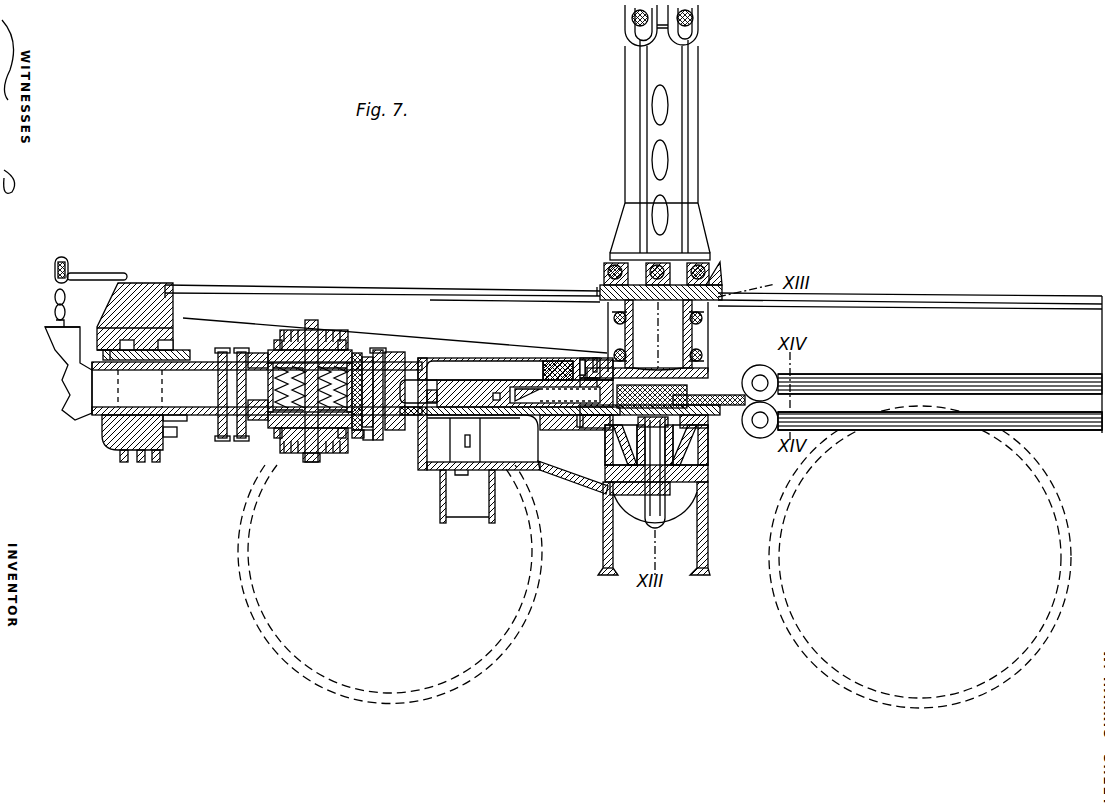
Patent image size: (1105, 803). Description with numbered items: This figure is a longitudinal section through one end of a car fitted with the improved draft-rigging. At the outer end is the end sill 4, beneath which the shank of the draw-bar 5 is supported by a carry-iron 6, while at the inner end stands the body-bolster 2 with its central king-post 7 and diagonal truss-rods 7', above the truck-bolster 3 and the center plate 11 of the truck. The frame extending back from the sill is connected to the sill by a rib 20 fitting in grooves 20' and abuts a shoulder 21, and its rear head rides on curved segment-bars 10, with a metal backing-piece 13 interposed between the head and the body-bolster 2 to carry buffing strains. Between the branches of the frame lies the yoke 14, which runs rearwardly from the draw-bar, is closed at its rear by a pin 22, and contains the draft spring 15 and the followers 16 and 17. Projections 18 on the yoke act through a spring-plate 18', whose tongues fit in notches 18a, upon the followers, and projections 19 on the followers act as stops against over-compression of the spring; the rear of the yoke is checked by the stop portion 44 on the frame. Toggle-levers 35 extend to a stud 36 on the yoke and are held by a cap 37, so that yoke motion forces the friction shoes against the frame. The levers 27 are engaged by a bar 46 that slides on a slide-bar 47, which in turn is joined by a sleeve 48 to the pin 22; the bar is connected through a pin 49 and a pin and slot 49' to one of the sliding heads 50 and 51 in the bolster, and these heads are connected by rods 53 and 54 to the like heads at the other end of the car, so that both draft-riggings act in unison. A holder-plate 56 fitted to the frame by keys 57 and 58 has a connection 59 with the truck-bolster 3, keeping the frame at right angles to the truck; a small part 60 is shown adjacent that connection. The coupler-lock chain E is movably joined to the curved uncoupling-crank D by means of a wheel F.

The body-bolster 2 is at (710, 342).
The truck-bolster 3 is at (708, 472).
The end sill 4 is at (78, 338).
The shank of draw-bar 5 is at (257, 388).
The carry-iron 6 is at (112, 430).
The king-post 7 is at (664, 152).
The diagonal truss-rods 7' is at (666, 24).
The segment-bars 10 is at (556, 364).
The center plate 11 is at (604, 494).
The metal backing-piece 13 is at (584, 360).
The yoke 14 is at (250, 357).
The draft spring 15 is at (280, 445).
The follower 16 is at (225, 440).
The follower 17 is at (357, 355).
The projections 18 is at (312, 401).
The spring-plate 18' is at (385, 454).
The notches 18a is at (358, 438).
The projections 19 is at (292, 350).
The rib 20 is at (123, 363).
The grooves 20' is at (155, 316).
The shoulder 21 is at (97, 355).
The pin 22 is at (378, 356).
The levers 27 is at (472, 388).
The toggle-levers 35 is at (352, 345).
The stud 36 is at (311, 322).
The cap 37 is at (310, 462).
The stop portion 44 is at (425, 364).
The bar 46 is at (497, 380).
The slide-bar 47 is at (580, 418).
The sleeve 48 is at (418, 389).
The pin 49 is at (674, 408).
The pin and slot 49' is at (658, 352).
The sliding head 50 is at (710, 394).
The sliding head 51 is at (738, 406).
The rod 53 is at (838, 378).
The rod 54 is at (870, 428).
The holder-plate 56 is at (562, 480).
The key 57 is at (460, 472).
The key 58 is at (472, 442).
The connection 59 is at (640, 500).
The nut 60 is at (672, 486).
The uncoupling-crank D is at (55, 284).
The chain E is at (66, 301).
The wheel F is at (68, 266).